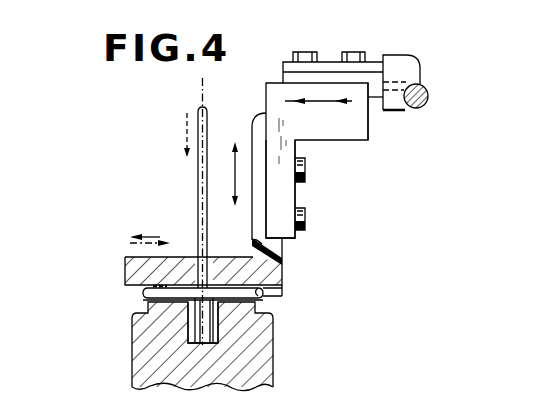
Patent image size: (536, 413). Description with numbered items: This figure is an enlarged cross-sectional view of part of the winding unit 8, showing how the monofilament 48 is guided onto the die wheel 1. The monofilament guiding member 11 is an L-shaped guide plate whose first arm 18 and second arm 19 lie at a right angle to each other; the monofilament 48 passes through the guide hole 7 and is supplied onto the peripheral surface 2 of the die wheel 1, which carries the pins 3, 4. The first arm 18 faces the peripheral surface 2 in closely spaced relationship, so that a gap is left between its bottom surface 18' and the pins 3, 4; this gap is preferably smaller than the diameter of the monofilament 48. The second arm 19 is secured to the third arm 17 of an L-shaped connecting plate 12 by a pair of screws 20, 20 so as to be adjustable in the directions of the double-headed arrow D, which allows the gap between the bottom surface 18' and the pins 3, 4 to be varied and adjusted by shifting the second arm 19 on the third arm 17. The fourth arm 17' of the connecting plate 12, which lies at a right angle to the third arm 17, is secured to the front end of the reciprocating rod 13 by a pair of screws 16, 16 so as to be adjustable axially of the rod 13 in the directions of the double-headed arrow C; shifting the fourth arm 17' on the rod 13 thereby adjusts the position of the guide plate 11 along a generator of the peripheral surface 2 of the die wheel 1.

The die wheel 1 is at (140, 353).
The peripheral surface 2 is at (178, 296).
The pin 3 is at (145, 293).
The pin 4 is at (248, 310).
The guide hole 7 is at (198, 255).
The winding unit 8 is at (120, 254).
The monofilament guiding member 11 is at (280, 281).
The connecting plate 12 is at (357, 134).
The reciprocating rod 13 is at (399, 63).
The screws 16 is at (345, 53).
The third arm 17 is at (317, 189).
The fourth arm 17' is at (392, 120).
The first arm 18 is at (308, 308).
The bottom surface 18' is at (281, 310).
The second arm 19 is at (283, 250).
The screws 20 is at (305, 172).
The monofilament 48 is at (197, 200).
The directions of double-headed arrow C is at (323, 101).
The directions of double-headed arrow D is at (232, 170).